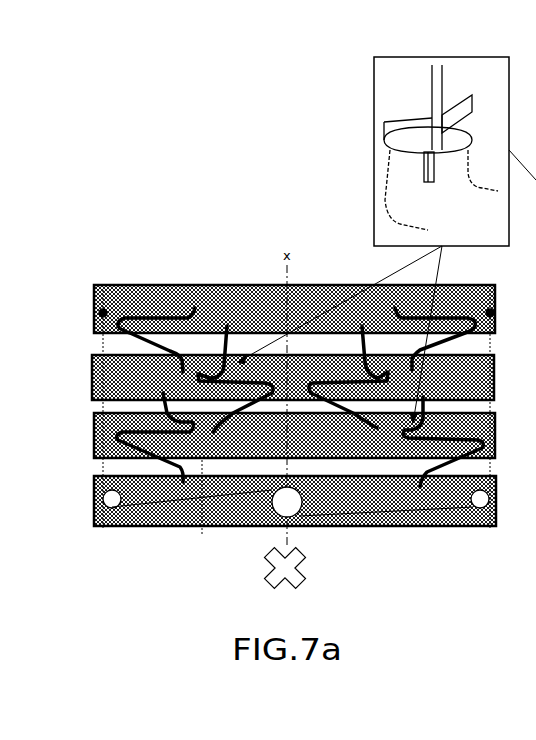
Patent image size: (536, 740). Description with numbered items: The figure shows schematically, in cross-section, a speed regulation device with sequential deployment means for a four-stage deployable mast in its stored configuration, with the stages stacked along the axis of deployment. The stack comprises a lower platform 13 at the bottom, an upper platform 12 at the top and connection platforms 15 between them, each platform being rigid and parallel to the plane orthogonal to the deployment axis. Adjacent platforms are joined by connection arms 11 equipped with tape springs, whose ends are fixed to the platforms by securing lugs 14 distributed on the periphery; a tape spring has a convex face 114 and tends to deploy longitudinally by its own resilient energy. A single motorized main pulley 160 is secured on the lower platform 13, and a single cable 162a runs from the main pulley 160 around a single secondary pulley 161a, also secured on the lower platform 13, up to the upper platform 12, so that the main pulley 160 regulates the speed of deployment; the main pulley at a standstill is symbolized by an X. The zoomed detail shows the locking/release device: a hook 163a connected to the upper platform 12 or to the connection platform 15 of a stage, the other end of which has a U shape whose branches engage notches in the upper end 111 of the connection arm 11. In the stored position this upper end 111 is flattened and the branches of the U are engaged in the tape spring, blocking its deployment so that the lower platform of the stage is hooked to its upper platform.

The connection arm equipped with tape spring 11 is at (137, 320).
The upper platform 12 is at (215, 285).
The lower platform 13 is at (202, 527).
The securing lug 14 is at (427, 105).
The connection platform 15 is at (495, 373).
The upper end of the connection arm 111 is at (374, 127).
The convex face 114 is at (383, 145).
The main motorized pulley 160 is at (300, 514).
The secondary pulley 161a is at (103, 527).
The cable 162a is at (95, 342).
The hook 163a is at (446, 88).